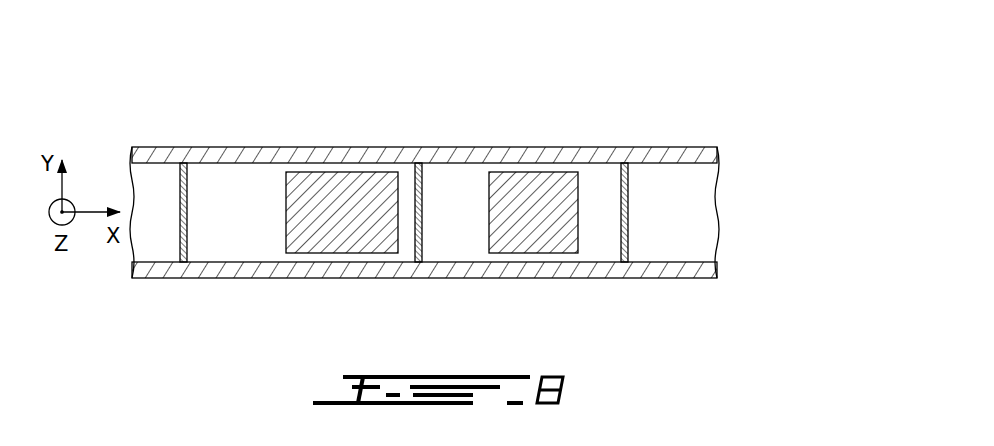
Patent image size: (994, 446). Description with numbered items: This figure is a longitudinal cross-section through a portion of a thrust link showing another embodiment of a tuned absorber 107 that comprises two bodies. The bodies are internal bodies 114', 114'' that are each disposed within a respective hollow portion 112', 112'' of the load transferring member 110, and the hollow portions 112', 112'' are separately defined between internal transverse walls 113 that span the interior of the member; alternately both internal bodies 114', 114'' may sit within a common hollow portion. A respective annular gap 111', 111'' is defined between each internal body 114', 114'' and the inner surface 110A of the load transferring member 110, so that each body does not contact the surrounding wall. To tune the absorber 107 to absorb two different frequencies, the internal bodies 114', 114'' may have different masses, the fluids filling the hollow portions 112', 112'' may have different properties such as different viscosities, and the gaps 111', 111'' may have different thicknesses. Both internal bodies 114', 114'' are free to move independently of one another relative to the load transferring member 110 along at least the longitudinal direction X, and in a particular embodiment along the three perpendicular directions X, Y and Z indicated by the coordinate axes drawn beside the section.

The tuned absorber 107 is at (411, 117).
The load transferring member 110 is at (664, 146).
The inner surface 110A is at (680, 262).
The annular gap 111' is at (247, 192).
The annular gap 111'' is at (458, 196).
The hollow portion 112' is at (215, 292).
The hollow portion 112'' is at (652, 284).
The internal transverse walls 113 is at (181, 190).
The internal body 114' is at (342, 171).
The internal body 114'' is at (533, 173).